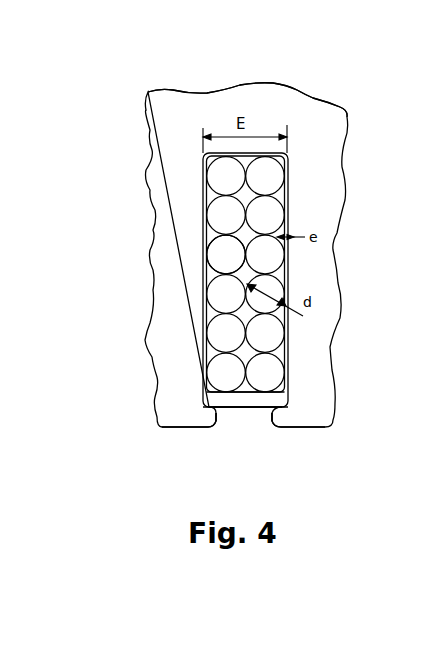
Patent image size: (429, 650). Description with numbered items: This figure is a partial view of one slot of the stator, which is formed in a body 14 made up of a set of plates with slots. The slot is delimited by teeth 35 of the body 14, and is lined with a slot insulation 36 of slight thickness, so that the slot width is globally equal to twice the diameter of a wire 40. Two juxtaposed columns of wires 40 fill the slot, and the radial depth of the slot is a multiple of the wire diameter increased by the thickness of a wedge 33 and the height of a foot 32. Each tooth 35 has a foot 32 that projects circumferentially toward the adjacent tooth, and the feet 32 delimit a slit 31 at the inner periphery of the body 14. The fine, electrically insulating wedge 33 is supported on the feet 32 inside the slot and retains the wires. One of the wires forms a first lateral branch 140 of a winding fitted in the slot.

The body 14 is at (290, 112).
The teeth 35 is at (165, 339).
The slot insulation 36 is at (288, 192).
The wire 40 is at (258, 177).
The first lateral branch 140 is at (227, 261).
The wedge 33 is at (233, 400).
The slit 31 is at (253, 415).
The foot 32 is at (190, 417).